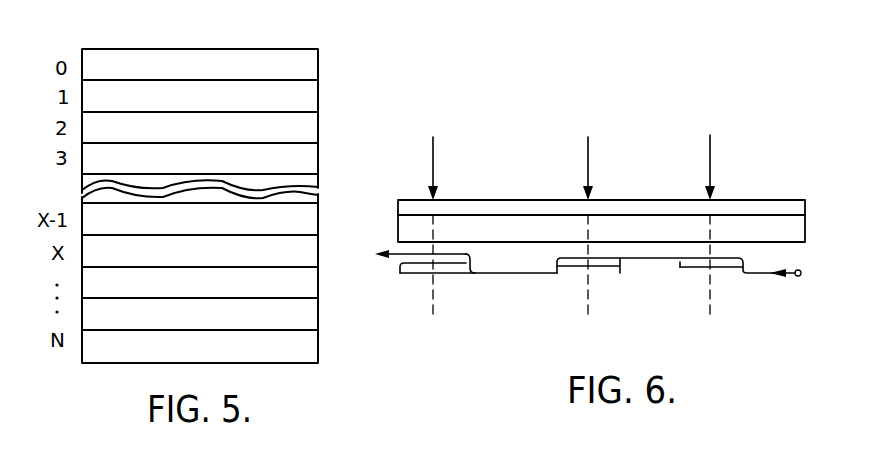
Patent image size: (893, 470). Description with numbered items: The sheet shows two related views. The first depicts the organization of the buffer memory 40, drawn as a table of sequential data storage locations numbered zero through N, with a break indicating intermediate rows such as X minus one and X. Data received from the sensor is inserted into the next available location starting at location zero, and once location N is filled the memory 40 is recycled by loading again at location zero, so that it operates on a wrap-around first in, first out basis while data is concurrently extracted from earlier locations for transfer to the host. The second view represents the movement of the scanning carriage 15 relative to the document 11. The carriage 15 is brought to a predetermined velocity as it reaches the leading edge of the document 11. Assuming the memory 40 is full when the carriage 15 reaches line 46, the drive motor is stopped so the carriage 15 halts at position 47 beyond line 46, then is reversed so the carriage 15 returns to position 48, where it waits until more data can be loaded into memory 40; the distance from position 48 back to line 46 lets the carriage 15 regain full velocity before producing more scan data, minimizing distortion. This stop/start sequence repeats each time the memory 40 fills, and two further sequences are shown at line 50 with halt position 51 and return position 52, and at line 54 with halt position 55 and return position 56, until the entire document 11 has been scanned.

In FIG. 5, the buffer memory 40 is at (180, 37).
In FIG. 6, the document 11 is at (528, 208).
In FIG. 6, the scan line position 54 is at (433, 165).
In FIG. 6, the scan line position 50 is at (588, 166).
In FIG. 6, the line 46 is at (710, 166).
In FIG. 6, the halt position 55 is at (400, 268).
In FIG. 6, the return position 56 is at (467, 266).
In FIG. 6, the halt position 51 is at (551, 273).
In FIG. 6, the return position 52 is at (620, 274).
In FIG. 6, the halt position 47 is at (681, 267).
In FIG. 6, the return position 48 is at (750, 274).
In FIG. 6, the carriage 15 is at (798, 278).